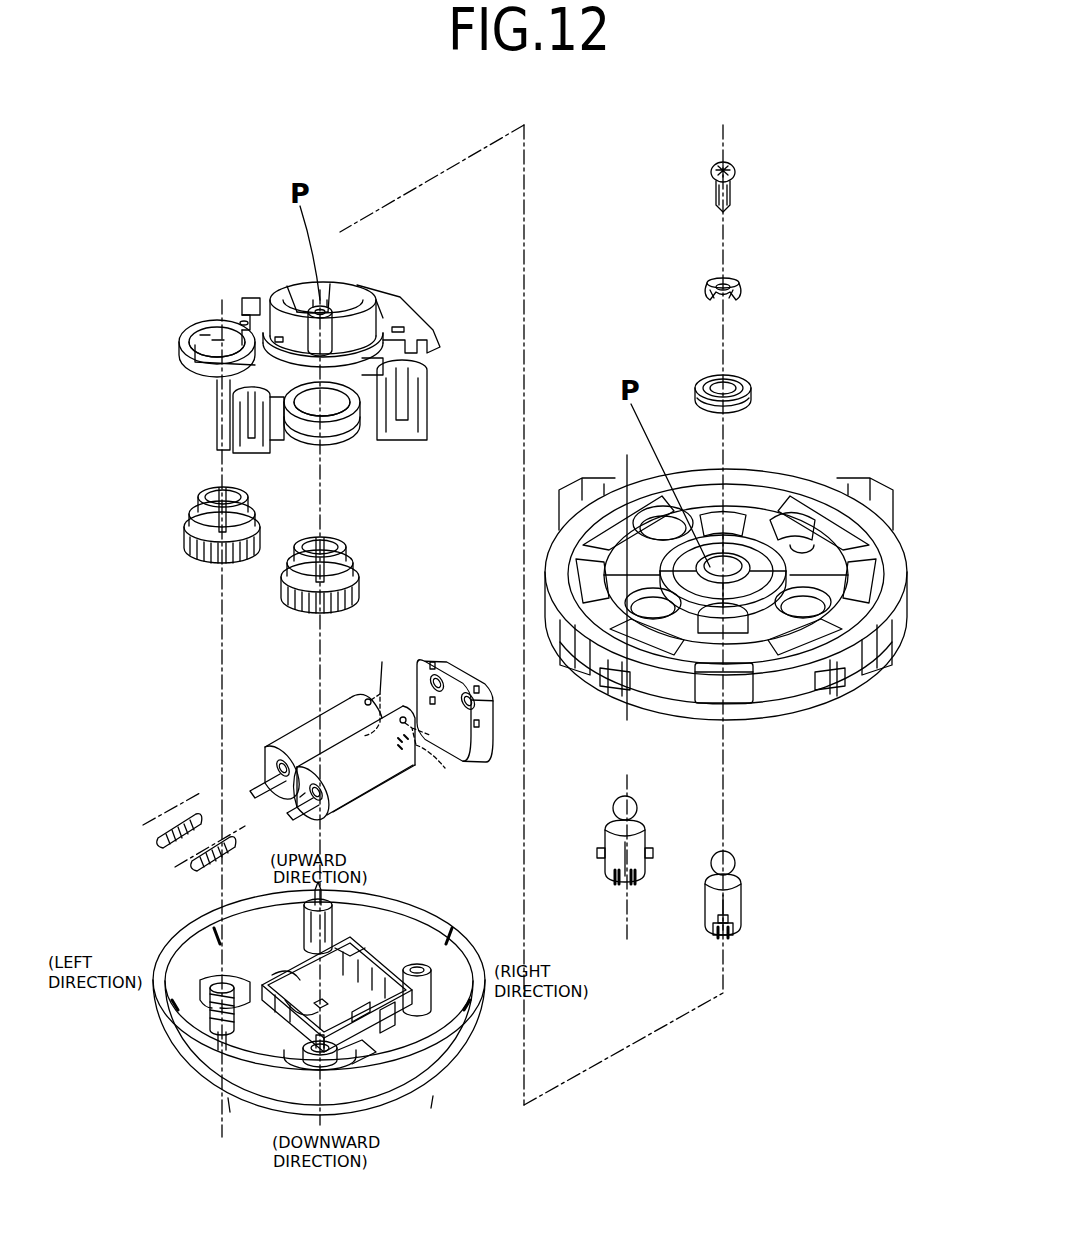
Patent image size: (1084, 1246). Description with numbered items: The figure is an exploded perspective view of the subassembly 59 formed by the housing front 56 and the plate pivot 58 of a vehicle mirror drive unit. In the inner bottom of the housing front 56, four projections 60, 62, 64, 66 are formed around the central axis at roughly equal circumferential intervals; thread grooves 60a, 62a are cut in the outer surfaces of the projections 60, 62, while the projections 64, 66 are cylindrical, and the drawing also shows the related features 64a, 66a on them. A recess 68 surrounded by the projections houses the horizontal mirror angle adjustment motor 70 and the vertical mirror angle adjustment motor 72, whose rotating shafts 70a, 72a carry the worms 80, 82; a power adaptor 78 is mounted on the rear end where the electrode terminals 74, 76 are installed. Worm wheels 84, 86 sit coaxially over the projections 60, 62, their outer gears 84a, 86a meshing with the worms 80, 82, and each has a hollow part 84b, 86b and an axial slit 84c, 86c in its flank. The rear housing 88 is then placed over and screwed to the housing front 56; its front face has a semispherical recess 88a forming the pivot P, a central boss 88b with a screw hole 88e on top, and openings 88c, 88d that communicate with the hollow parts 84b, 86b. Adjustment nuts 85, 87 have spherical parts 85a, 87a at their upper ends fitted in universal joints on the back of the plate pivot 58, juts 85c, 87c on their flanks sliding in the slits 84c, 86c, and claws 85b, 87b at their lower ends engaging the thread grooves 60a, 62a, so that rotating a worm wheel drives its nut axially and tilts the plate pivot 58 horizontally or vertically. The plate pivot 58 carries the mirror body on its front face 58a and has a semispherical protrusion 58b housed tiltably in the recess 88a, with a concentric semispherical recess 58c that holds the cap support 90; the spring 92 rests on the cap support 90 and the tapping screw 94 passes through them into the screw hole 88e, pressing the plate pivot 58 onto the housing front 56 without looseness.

The housing front 56 is at (420, 1070).
The plate pivot 58 is at (752, 581).
The front face of plate pivot 58a is at (845, 507).
The semispherical protrusion 58b is at (707, 592).
The semispherical recess 58c is at (747, 567).
The subassembly 59 is at (862, 84).
The projection 60 is at (202, 998).
The thread groove 60a is at (227, 1030).
The projection 62 is at (330, 1067).
The thread groove 62a is at (300, 1067).
The projection 64 is at (310, 933).
The post pin 64a is at (327, 928).
The projection 66 is at (423, 997).
The boss hole 66a is at (417, 967).
The recess 68 is at (373, 1020).
The horizontal mirror angle adjustment motor 70 is at (279, 715).
The rotating shaft 70a is at (252, 781).
The vertical mirror angle adjustment motor 72 is at (383, 779).
The rotating shaft 72a is at (319, 808).
The electrode terminal 74 is at (380, 694).
The electrode terminal 76 is at (416, 746).
The power adaptor 78 is at (453, 655).
The worm 80 is at (168, 822).
The worm 82 is at (212, 852).
The worm wheel 84 is at (193, 520).
The gear 84a is at (200, 552).
The hollow part 84b is at (215, 497).
The axial slit 84c is at (228, 496).
The adjustment nut 85 is at (619, 849).
The spherical part 85a is at (617, 800).
The claw 85b is at (627, 886).
The jut 85c is at (596, 853).
The worm wheel 86 is at (338, 578).
The gear 86a is at (292, 604).
The hollow part 86b is at (341, 560).
The axial slit 86c is at (323, 545).
The adjustment nut 87 is at (771, 915).
The spherical part 87a is at (733, 857).
The claw 87b is at (720, 940).
The jut 87c is at (734, 923).
The rear housing 88 is at (290, 348).
The semispherical recess 88a is at (298, 306).
The boss 88b is at (345, 338).
The opening 88c is at (192, 360).
The opening 88d is at (340, 420).
The screw hole 88e is at (323, 303).
The cap support 90 is at (751, 397).
The spring 92 is at (742, 287).
The tapping screw 94 is at (733, 192).